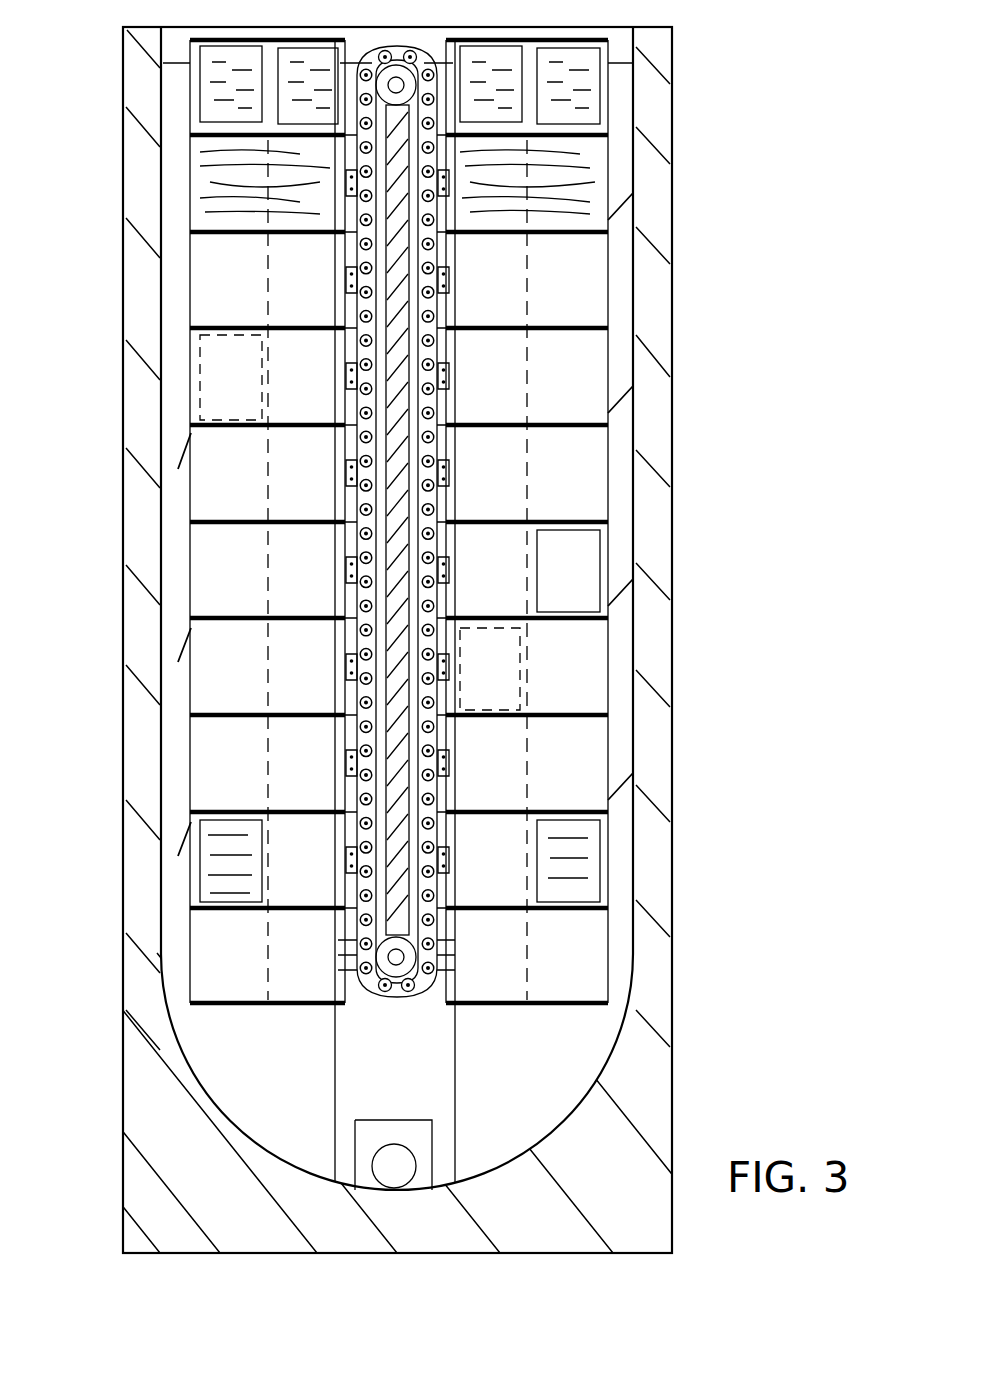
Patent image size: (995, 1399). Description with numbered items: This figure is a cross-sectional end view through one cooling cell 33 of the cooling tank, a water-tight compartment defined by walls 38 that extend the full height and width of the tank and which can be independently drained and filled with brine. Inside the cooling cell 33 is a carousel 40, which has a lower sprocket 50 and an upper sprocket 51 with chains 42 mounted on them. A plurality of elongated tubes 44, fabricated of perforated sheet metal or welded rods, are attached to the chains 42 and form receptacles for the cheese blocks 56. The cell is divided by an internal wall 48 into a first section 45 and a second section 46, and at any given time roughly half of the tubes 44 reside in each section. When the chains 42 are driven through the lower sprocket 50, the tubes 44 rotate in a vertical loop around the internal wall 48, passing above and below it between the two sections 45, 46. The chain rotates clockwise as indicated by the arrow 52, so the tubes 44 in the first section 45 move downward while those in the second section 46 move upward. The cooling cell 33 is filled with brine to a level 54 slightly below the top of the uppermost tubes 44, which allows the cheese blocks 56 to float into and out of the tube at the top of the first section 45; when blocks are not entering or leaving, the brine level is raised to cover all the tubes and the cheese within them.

The cooling cell 33 is at (397, 640).
The wall 38 is at (374, 640).
The carousel 40 is at (544, 914).
The chain 42 is at (361, 536).
The elongated tube 44 is at (215, 48).
The first cooling cell section 45 is at (580, 482).
The second cooling cell section 46 is at (213, 765).
The internal wall 48 is at (405, 550).
The lower sprocket 50 is at (407, 998).
The upper sprocket 51 is at (394, 62).
The arrow 52 is at (497, 1086).
The brine level 54 is at (622, 62).
The cheese block 56 is at (585, 90).